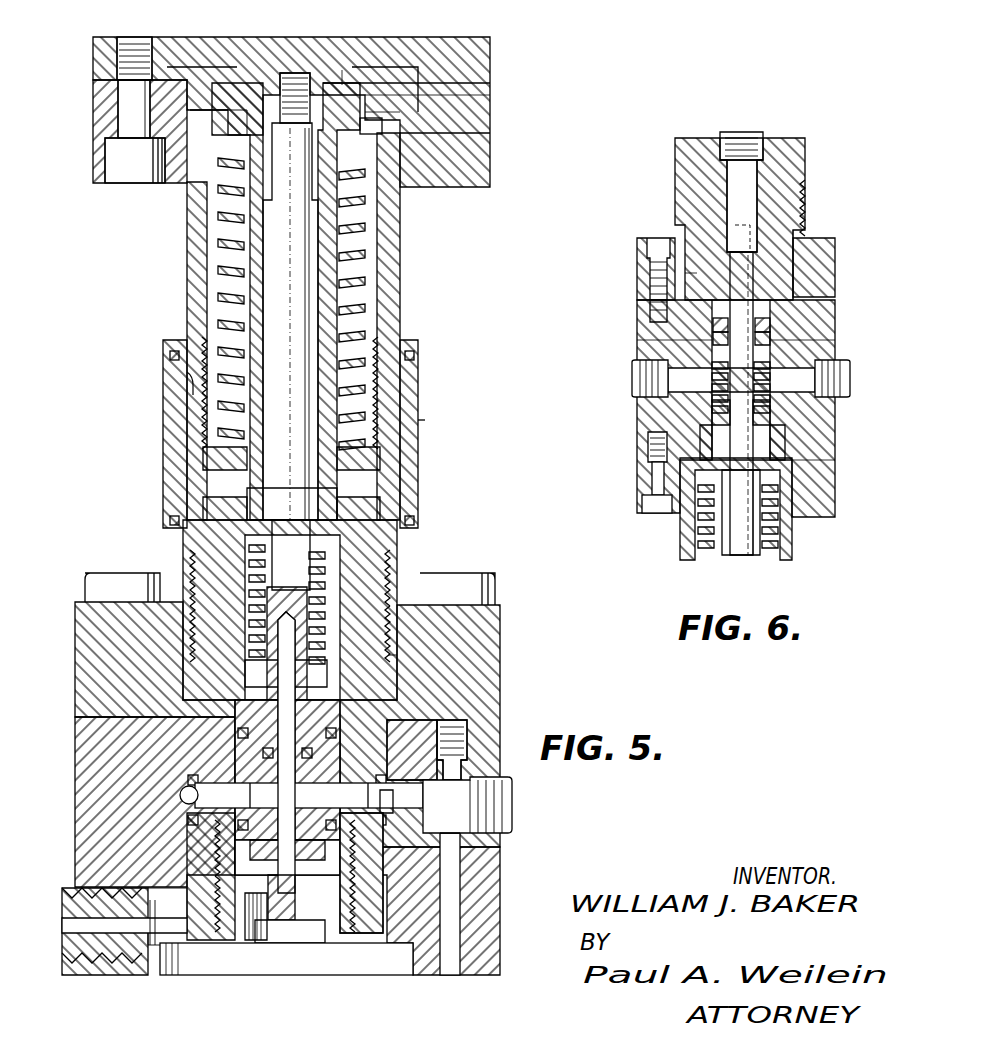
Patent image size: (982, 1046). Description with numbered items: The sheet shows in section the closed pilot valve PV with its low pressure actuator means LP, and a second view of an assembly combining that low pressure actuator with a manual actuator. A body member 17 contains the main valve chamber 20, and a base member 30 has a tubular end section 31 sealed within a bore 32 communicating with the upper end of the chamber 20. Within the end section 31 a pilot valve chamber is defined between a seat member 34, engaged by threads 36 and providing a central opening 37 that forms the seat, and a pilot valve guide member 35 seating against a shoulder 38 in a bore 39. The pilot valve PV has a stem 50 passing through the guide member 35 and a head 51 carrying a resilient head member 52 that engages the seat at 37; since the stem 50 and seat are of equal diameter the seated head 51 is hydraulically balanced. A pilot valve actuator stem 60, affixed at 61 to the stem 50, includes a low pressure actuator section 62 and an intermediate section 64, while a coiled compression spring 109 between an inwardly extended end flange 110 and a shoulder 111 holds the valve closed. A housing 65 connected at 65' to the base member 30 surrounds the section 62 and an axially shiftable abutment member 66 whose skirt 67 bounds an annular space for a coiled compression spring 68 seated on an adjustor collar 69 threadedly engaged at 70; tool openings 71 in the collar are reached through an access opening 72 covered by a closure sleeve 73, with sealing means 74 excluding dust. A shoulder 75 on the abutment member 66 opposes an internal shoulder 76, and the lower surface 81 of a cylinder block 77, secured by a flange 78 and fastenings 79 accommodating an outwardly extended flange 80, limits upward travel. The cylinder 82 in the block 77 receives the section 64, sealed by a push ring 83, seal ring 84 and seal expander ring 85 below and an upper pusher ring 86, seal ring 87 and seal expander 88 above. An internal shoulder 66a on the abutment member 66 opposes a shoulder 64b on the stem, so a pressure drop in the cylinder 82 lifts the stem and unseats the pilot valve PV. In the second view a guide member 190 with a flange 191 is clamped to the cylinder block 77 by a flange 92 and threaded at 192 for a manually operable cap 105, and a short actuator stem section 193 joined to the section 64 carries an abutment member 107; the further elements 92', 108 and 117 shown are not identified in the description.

In FIG. 5, the body member 17 is at (490, 620).
In FIG. 5, the main valve chamber 20 is at (168, 960).
In FIG. 5, the base member 30 is at (175, 672).
In FIG. 5, the tubular end section 31 is at (240, 740).
In FIG. 5, the bore 32 is at (235, 858).
In FIG. 5, the seat member 34 is at (232, 940).
In FIG. 5, the pilot valve guide member 35 is at (345, 720).
In FIG. 5, the threads 36 is at (360, 925).
In FIG. 5, the central opening 37 is at (290, 922).
In FIG. 5, the shoulder 38 is at (240, 703).
In FIG. 5, the bore 39 is at (250, 757).
In FIG. 5, the pilot valve stem 50 is at (292, 690).
In FIG. 5, the head 51 is at (250, 840).
In FIG. 5, the resilient head member 52 is at (258, 942).
In FIG. 5, the pilot valve actuator stem 60 is at (258, 262).
In FIG. 5, the connection 61 is at (245, 648).
In FIG. 5, the low pressure actuator section 62 is at (300, 502).
In FIG. 6, the low pressure actuator section 62 is at (733, 553).
In FIG. 5, the intermediate section 64 is at (276, 60).
In FIG. 6, the intermediate section 64 is at (748, 322).
In FIG. 5, the shoulder 64b is at (262, 152).
In FIG. 5, the housing 65 is at (325, 326).
In FIG. 6, the housing 65 is at (763, 509).
In FIG. 5, the threaded connection 65' is at (330, 610).
In FIG. 5, the abutment member 66 is at (355, 95).
In FIG. 6, the abutment member 66 is at (705, 472).
In FIG. 5, the internal shoulder 66a is at (372, 128).
In FIG. 5, the skirt 67 is at (255, 282).
In FIG. 6, the skirt 67 is at (755, 560).
In FIG. 5, the coiled compression spring 68 is at (355, 255).
In FIG. 6, the coiled compression spring 68 is at (770, 556).
In FIG. 5, the adjustor collar 69 is at (210, 460).
In FIG. 5, the threaded engagement 70 is at (380, 466).
In FIG. 5, the openings 71 is at (205, 490).
In FIG. 5, the access opening 72 is at (190, 375).
In FIG. 5, the closure sleeve 73 is at (415, 386).
In FIG. 5, the sealing means 74 is at (418, 357).
In FIG. 5, the shoulder 75 is at (375, 97).
In FIG. 5, the shoulder 76 is at (382, 112).
In FIG. 5, the cylinder block 77 is at (104, 65).
In FIG. 6, the cylinder block 77 is at (765, 325).
In FIG. 5, the flange 78 is at (95, 130).
In FIG. 6, the flange 78 is at (822, 496).
In FIG. 5, the fastenings 79 is at (120, 172).
In FIG. 6, the fastenings 79 is at (655, 512).
In FIG. 5, the outwardly extended flange 80 is at (420, 76).
In FIG. 5, the lower surface 81 is at (408, 76).
In FIG. 6, the cylinder 82 is at (772, 402).
In FIG. 6, the push ring 83 is at (790, 453).
In FIG. 6, the seal ring 84 is at (770, 428).
In FIG. 6, the seal expander ring 85 is at (712, 410).
In FIG. 6, the upper pusher ring 86 is at (715, 322).
In FIG. 6, the seal ring 87 is at (713, 340).
In FIG. 6, the seal expander 88 is at (770, 342).
In FIG. 6, the flange 92 is at (840, 263).
In FIG. 6, the bolt 92' is at (645, 260).
In FIG. 6, the manually operable cap 105 is at (790, 158).
In FIG. 6, the abutment member 107 is at (745, 142).
In FIG. 6, the shoulder 108 is at (725, 163).
In FIG. 5, the coiled compression spring 109 is at (323, 590).
In FIG. 5, the inwardly extended end flange 110 is at (292, 522).
In FIG. 5, the shoulder 111 is at (390, 656).
In FIG. 5, the passage 117 is at (345, 80).
In FIG. 6, the guide member 190 is at (775, 215).
In FIG. 6, the flange 191 is at (800, 288).
In FIG. 6, the threads 192 is at (780, 192).
In FIG. 6, the short pilot valve actuator stem section 193 is at (740, 190).
In FIG. 5, the low pressure actuator means LP is at (470, 416).
In FIG. 5, the pilot valve PV is at (520, 850).